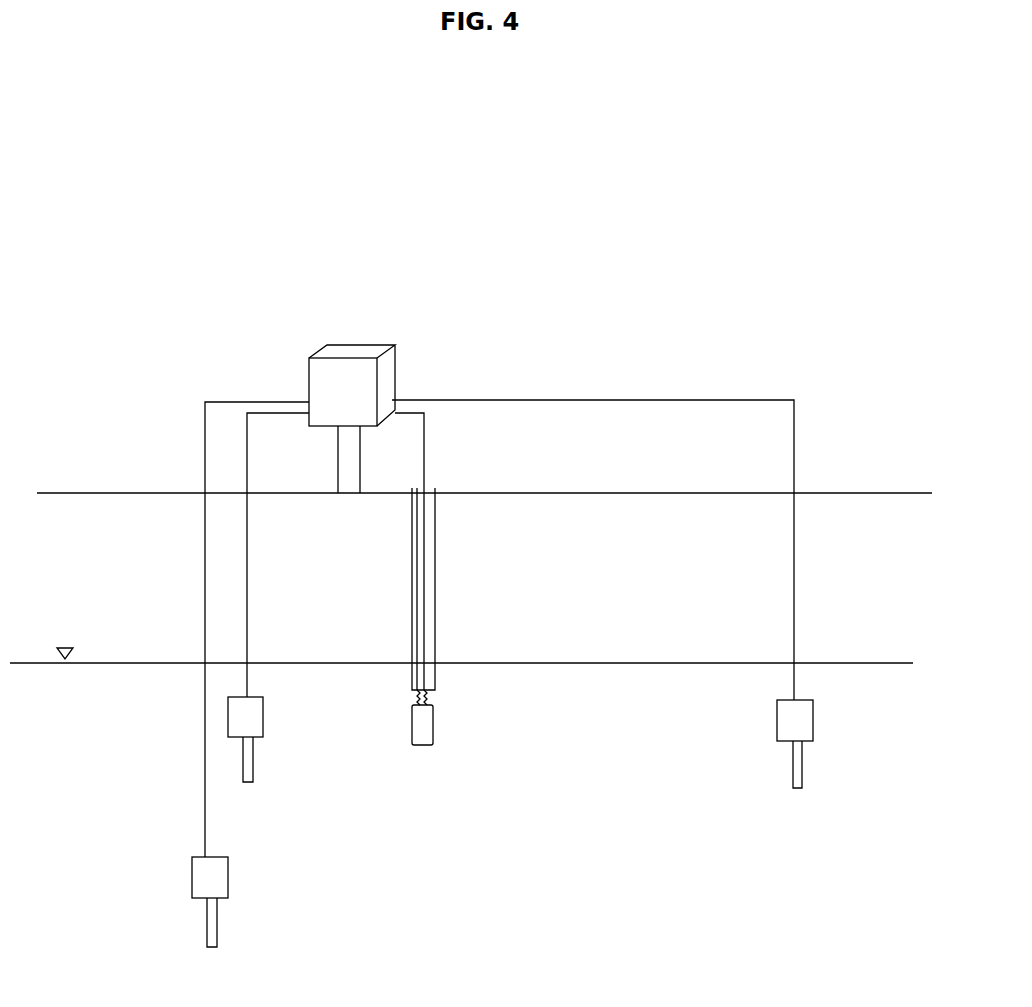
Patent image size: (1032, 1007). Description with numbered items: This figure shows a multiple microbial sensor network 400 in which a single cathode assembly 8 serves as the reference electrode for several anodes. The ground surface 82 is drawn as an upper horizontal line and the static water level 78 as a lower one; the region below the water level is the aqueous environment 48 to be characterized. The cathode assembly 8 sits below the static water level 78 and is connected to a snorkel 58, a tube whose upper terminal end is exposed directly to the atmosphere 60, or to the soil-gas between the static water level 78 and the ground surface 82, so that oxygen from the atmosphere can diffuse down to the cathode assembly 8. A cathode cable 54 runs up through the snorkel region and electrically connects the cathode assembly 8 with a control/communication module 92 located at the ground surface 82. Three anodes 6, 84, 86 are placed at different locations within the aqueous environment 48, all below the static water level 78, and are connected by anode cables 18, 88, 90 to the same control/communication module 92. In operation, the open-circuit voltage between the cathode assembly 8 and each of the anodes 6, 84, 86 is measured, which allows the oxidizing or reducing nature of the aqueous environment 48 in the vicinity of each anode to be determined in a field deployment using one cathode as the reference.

The multiple microbial sensor network 400 is at (686, 250).
The control/communication module 92 is at (399, 362).
The atmosphere 60 is at (593, 432).
The anode cable 88 is at (794, 613).
The anode cable 90 is at (205, 797).
The anode cable 18 is at (247, 627).
The cathode cable 54 is at (447, 469).
The ground surface 82 is at (130, 493).
The static water level 78 is at (461, 638).
The aqueous environment 48 is at (120, 745).
The snorkel 58 is at (452, 689).
The cathode assembly 8 is at (433, 742).
The anode 6 is at (256, 739).
The anode 84 is at (810, 738).
The anode 86 is at (250, 893).